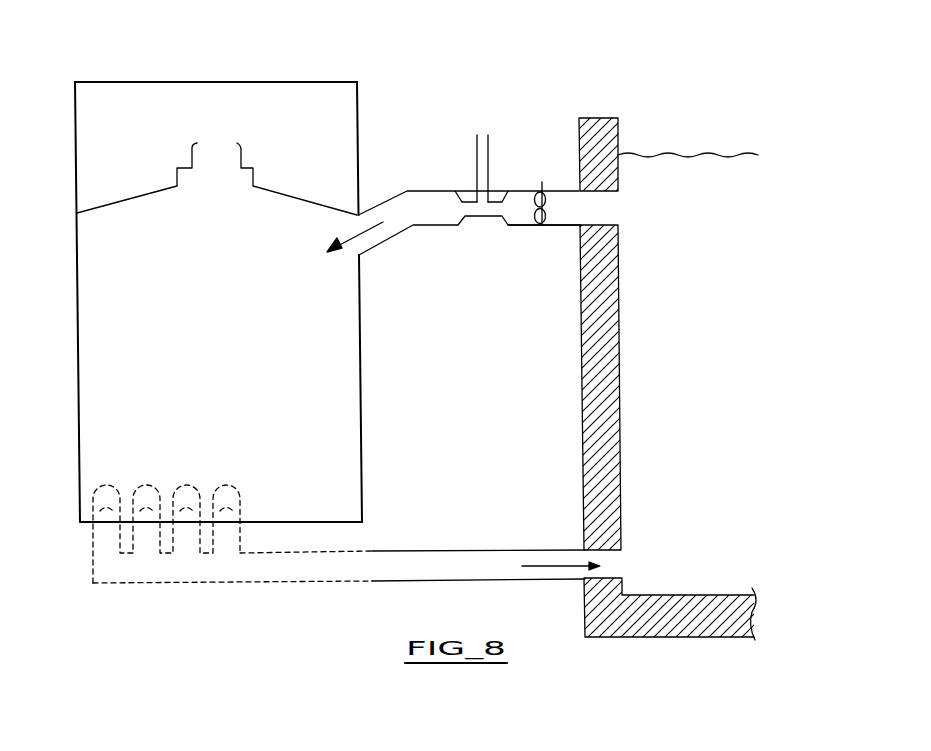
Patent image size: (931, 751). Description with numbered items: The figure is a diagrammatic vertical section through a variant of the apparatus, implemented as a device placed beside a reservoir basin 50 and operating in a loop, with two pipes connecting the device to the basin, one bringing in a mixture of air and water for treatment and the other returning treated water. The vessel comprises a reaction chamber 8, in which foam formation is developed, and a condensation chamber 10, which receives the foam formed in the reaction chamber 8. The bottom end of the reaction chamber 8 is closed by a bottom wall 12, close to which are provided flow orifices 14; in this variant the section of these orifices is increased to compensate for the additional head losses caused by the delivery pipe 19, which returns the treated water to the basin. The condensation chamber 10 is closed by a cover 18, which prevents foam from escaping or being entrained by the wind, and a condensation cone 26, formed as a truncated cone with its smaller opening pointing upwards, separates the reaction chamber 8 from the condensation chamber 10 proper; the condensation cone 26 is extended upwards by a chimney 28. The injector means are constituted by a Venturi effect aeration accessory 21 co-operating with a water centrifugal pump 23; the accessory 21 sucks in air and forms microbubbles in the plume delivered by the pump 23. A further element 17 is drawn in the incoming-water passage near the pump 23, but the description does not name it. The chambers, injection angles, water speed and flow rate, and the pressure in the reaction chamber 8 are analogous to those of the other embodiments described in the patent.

The reaction chamber 8 is at (360, 380).
The condensation chamber 10 is at (357, 112).
The bottom wall 12 is at (345, 524).
The flow orifices 14 is at (96, 490).
The passage through tank wall 17 is at (560, 210).
The cover 18 is at (230, 82).
The delivery pipe 19 is at (503, 560).
The Venturi effect aeration accessory 21 is at (477, 153).
The water centrifugal pump 23 is at (542, 178).
The condensation cone 26 is at (318, 200).
The chimney 28 is at (242, 148).
The reservoir basin 50 is at (697, 148).